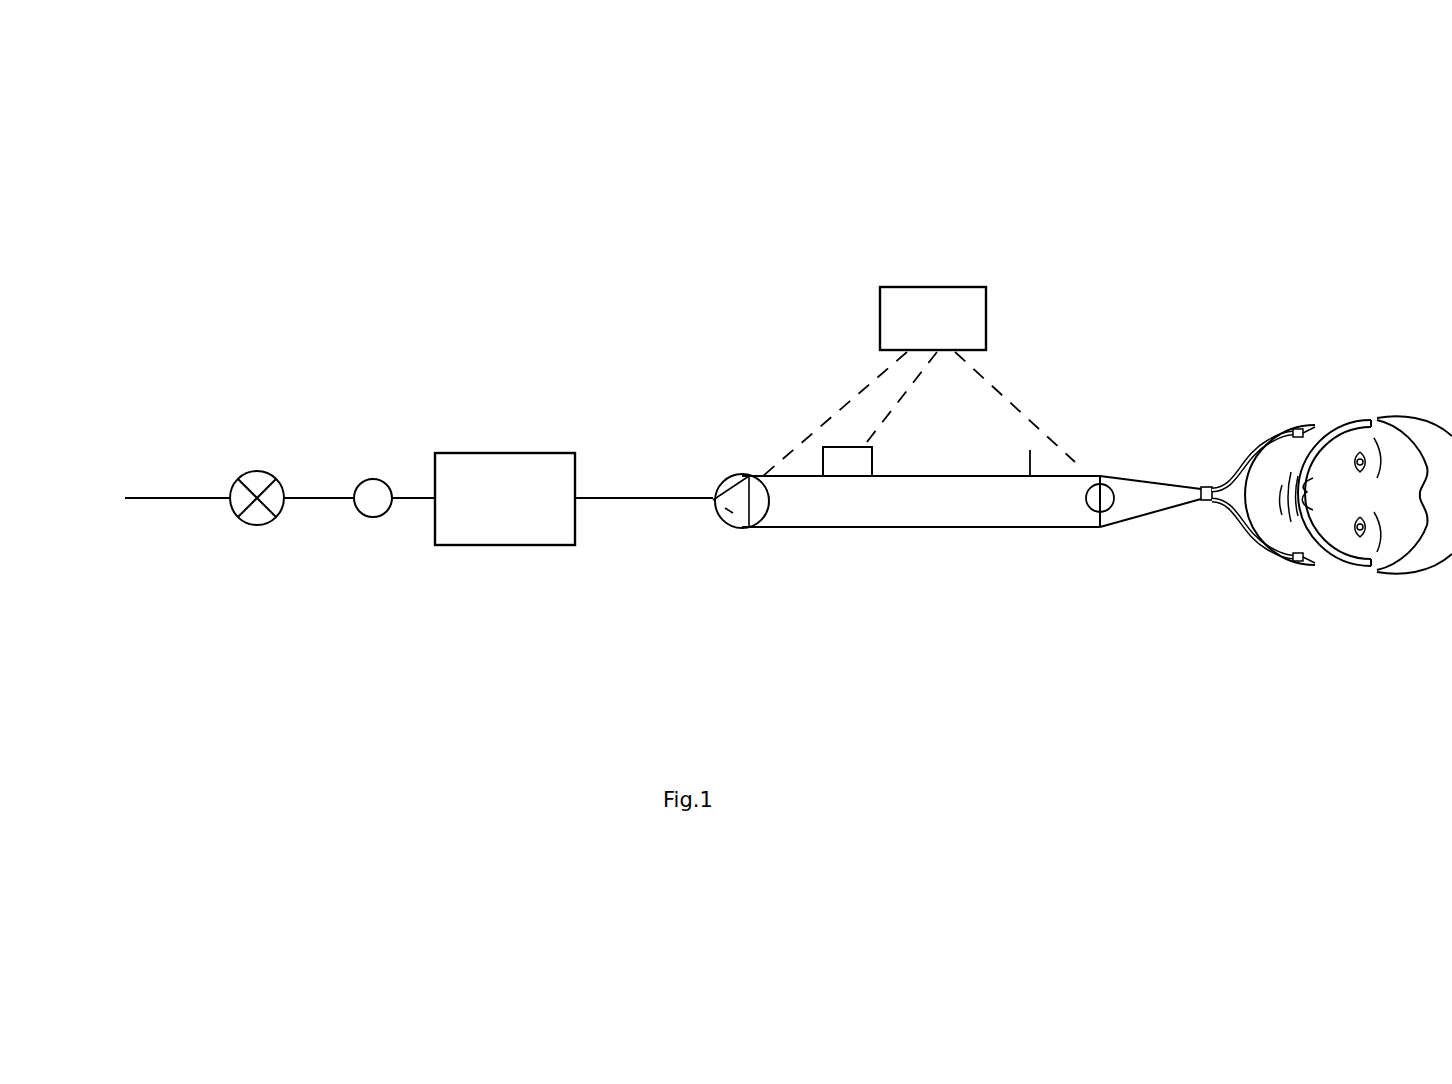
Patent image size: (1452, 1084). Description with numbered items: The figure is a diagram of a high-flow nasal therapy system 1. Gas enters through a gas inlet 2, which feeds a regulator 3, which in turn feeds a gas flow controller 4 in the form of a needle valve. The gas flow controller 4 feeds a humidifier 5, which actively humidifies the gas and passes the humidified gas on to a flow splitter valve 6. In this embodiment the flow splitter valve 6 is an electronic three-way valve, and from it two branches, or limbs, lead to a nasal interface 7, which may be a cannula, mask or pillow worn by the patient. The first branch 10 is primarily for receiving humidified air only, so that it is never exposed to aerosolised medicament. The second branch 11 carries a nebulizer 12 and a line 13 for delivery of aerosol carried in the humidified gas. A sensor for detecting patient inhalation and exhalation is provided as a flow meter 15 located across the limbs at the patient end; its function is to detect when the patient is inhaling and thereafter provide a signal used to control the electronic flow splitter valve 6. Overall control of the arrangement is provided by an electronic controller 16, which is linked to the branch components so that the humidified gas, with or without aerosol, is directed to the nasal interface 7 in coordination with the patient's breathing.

The system 1 is at (165, 277).
The gas inlet 2 is at (177, 499).
The regulator 3 is at (268, 523).
The gas flow controller 4 is at (373, 517).
The humidifier 5 is at (479, 453).
The flow splitter valve 6 is at (713, 498).
The nasal interface 7 is at (1265, 438).
The first branch 10 is at (975, 533).
The second branch 11 is at (926, 474).
The nebulizer 12 is at (842, 447).
The line 13 is at (1030, 450).
The flow meter 15 is at (1113, 503).
The electronic controller 16 is at (880, 322).